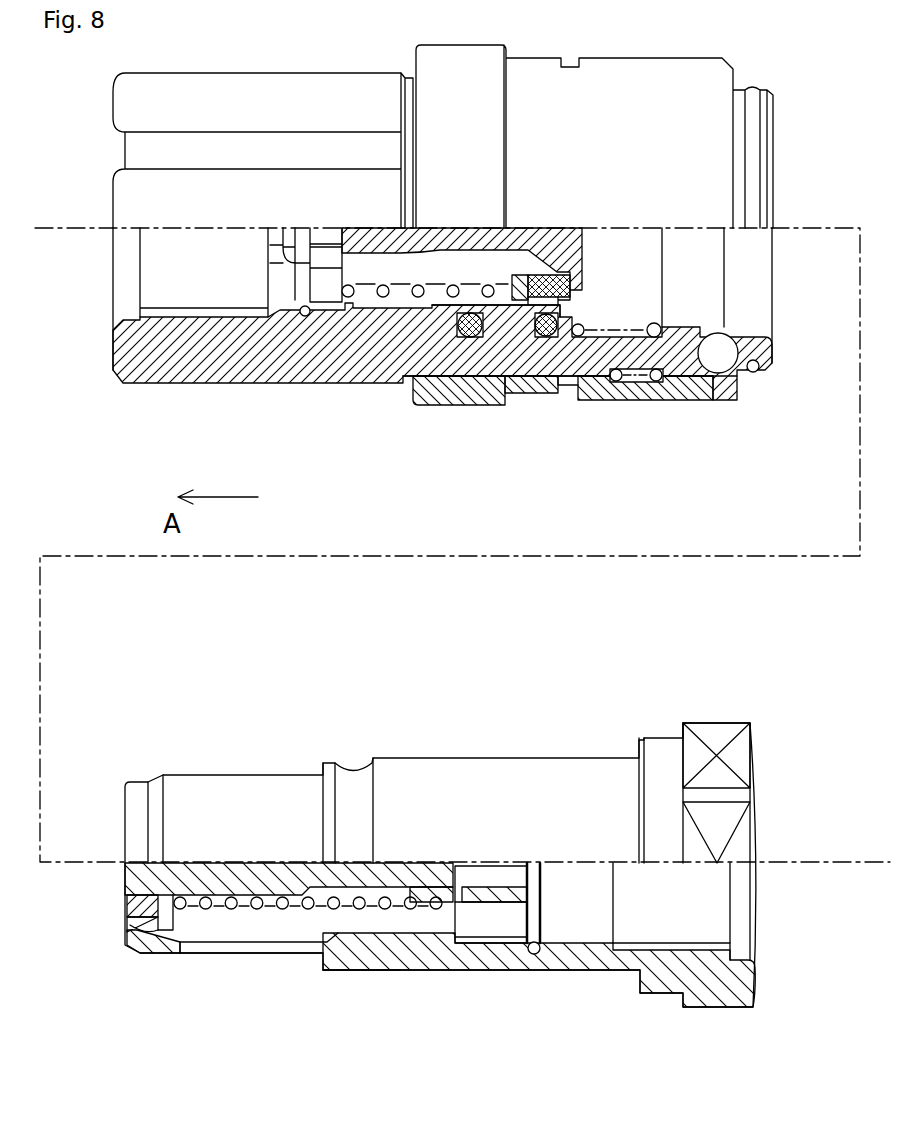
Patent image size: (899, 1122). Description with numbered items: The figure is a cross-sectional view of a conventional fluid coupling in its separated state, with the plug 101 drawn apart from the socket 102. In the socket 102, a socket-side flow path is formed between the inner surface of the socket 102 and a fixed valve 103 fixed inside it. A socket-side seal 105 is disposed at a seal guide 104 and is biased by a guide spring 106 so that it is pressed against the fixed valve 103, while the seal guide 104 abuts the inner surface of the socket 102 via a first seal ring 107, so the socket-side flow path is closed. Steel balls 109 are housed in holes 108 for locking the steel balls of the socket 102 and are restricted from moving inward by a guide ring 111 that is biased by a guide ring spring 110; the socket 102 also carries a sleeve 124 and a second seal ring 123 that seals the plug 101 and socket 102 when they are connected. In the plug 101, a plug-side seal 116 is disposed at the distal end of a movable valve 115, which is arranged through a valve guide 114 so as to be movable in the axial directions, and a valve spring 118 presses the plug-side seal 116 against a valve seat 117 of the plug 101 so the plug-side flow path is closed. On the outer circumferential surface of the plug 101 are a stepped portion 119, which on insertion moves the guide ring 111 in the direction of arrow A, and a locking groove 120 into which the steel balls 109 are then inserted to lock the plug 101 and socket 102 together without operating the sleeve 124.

The plug 101 is at (207, 953).
The socket 102 is at (163, 383).
The fixed valve 103 is at (422, 253).
The seal guide 104 is at (522, 300).
The socket-side seal 105 is at (592, 298).
The guide spring 106 is at (413, 298).
The first seal ring 107 is at (468, 337).
The holes for locking the steel balls 108 is at (708, 376).
The steel balls 109 is at (740, 372).
The guide ring spring 110 is at (657, 382).
The guide ring 111 is at (712, 322).
The valve guide 114 is at (488, 903).
The movable valve 115 is at (267, 888).
The plug-side seal 116 is at (127, 900).
The valve seat 117 is at (127, 918).
The valve spring 118 is at (432, 908).
The stepped portion 119 is at (318, 963).
The locking groove 120 is at (350, 968).
The second seal ring 123 is at (558, 298).
The sleeve 124 is at (678, 400).